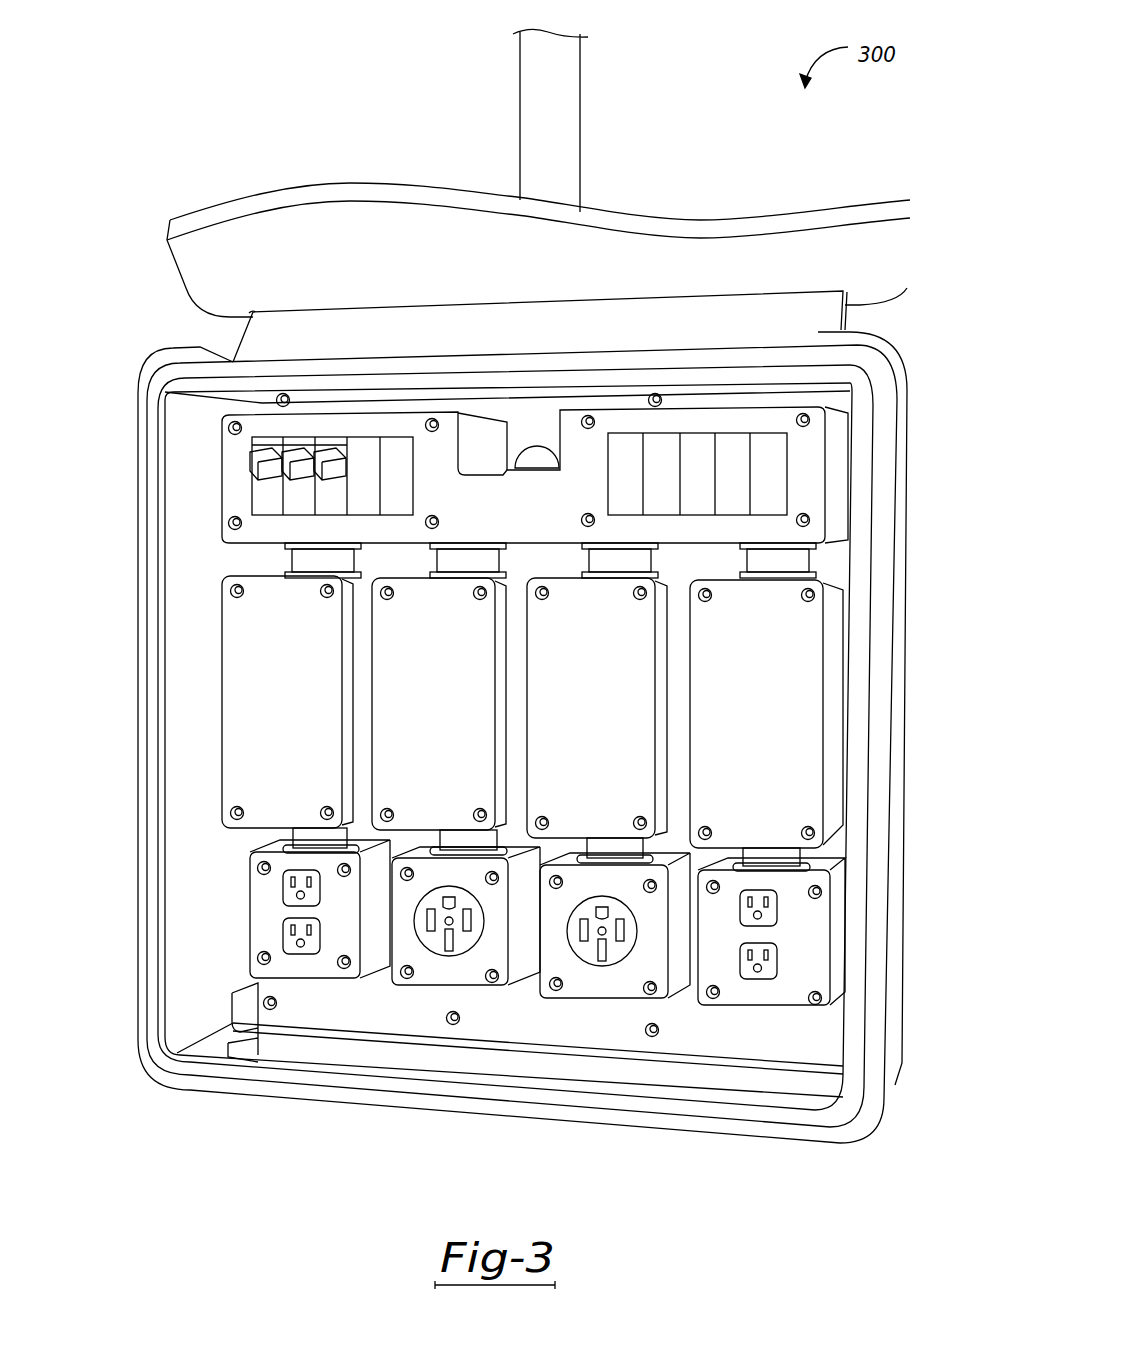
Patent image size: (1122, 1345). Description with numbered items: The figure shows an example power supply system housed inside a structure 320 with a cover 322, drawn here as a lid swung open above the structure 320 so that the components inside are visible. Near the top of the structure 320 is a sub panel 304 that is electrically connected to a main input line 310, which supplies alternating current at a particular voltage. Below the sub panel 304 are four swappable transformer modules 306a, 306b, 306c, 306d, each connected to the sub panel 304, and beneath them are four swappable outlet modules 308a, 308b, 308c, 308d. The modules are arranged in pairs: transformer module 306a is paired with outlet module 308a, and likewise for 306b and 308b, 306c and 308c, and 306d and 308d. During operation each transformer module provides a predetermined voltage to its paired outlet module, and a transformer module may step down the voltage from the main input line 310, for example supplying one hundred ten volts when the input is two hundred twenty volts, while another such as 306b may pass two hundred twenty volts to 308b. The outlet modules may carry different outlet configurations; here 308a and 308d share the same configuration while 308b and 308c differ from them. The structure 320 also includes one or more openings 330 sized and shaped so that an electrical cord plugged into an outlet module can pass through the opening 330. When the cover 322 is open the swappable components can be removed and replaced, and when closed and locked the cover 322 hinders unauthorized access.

The cover 322 is at (197, 268).
The structure 320 is at (152, 430).
The sub panel 304 is at (232, 490).
The main input line 310 is at (535, 445).
The swappable transformer module 306a is at (292, 711).
The swappable transformer module 306b is at (445, 711).
The swappable transformer module 306c is at (605, 716).
The swappable transformer module 306d is at (770, 721).
The swappable outlet module 308a is at (327, 968).
The swappable outlet module 308b is at (472, 976).
The swappable outlet module 308c is at (628, 985).
The swappable outlet module 308d is at (790, 995).
The opening 330 is at (233, 902).